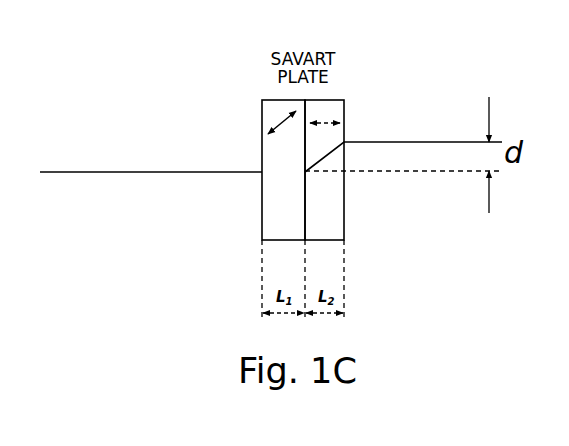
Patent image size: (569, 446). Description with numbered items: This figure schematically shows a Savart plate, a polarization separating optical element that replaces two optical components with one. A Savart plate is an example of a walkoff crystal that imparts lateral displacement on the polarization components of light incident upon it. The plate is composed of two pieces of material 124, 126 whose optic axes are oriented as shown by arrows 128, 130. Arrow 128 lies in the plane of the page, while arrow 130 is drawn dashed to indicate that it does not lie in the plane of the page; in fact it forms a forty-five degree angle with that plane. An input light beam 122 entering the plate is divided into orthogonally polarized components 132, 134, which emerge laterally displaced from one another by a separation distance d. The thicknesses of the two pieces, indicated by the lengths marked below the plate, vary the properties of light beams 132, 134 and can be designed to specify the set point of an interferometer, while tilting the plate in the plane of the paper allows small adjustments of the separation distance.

The input light beam 122 is at (57, 182).
The piece of material 124 is at (271, 211).
The piece of material 126 is at (327, 210).
The arrow 128 is at (273, 113).
The arrow 130 is at (327, 112).
The orthogonally polarized component 132 is at (426, 135).
The orthogonally polarized component 134 is at (427, 177).